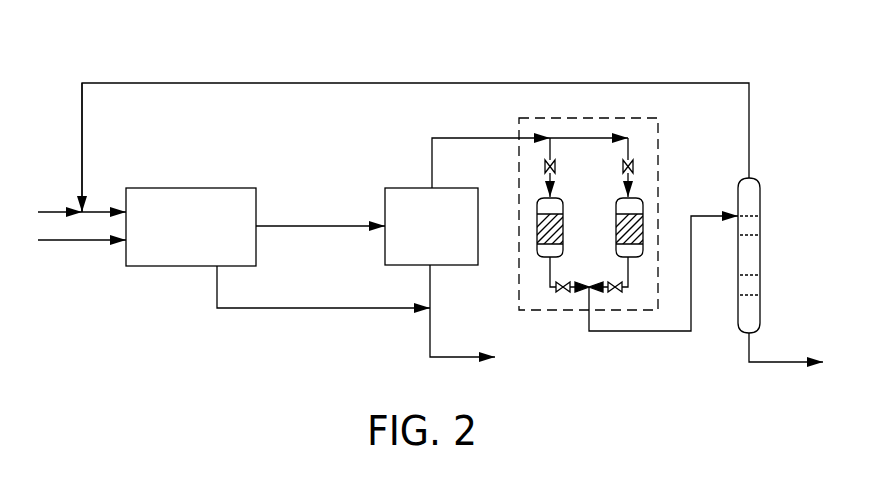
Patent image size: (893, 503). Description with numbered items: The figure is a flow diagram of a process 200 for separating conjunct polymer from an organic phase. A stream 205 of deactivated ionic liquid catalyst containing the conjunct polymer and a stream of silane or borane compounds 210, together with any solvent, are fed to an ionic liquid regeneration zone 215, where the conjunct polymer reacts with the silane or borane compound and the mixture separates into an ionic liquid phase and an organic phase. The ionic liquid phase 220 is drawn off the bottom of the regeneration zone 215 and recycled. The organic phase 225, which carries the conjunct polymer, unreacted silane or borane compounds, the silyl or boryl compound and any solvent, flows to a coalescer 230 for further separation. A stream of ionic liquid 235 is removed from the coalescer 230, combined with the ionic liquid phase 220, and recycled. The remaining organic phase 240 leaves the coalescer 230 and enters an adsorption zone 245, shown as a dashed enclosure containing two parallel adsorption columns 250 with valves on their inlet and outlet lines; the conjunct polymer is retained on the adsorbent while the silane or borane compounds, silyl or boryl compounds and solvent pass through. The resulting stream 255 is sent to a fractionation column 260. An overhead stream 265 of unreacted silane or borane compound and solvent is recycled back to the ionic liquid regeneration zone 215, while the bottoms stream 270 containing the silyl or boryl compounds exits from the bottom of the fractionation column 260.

The process 200 is at (103, 66).
The stream of deactivated ionic liquid catalyst 205 is at (58, 242).
The stream of silane or borane compounds 210 is at (50, 209).
The ionic liquid regeneration zone 215 is at (192, 187).
The ionic liquid phase 220 is at (216, 285).
The organic phase 225 is at (310, 223).
The coalescer 230 is at (408, 187).
The stream of ionic liquid 235 is at (432, 288).
The organic phase 240 is at (436, 137).
The adsorption zone 245 is at (651, 117).
The adsorption column 250 is at (625, 197).
The stream 255 is at (641, 332).
The fractionation column 260 is at (755, 177).
The overhead stream 265 is at (750, 123).
The bottoms stream 270 is at (792, 361).